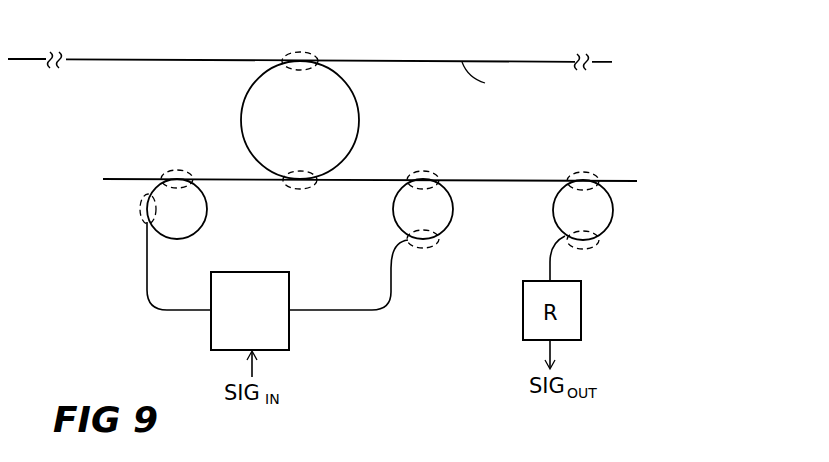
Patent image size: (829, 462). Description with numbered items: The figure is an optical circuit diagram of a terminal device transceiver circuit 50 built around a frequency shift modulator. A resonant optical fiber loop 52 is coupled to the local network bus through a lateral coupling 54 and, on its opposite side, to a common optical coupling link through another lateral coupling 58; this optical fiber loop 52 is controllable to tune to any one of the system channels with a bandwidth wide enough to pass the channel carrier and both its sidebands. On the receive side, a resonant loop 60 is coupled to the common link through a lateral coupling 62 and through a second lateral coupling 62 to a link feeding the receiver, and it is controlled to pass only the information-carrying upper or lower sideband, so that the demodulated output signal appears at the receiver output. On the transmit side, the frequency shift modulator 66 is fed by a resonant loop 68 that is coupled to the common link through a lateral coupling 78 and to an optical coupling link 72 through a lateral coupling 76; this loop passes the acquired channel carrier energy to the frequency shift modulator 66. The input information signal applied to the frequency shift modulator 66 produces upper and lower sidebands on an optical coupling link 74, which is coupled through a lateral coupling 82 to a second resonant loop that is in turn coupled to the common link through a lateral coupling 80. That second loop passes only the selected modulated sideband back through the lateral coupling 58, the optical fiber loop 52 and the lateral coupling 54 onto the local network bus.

The transceiver circuit 50 is at (456, 40).
The optical fiber loop 52 is at (358, 106).
The lateral coupling 54 is at (313, 52).
The lateral coupling 58 is at (297, 184).
The resonant loop 60 is at (613, 211).
The lateral coupling 62 is at (590, 173).
The frequency shift modulator 66 is at (211, 340).
The resonant loop 68 is at (207, 210).
The optical coupling link 72 is at (145, 266).
The optical coupling link 74 is at (330, 311).
The lateral coupling 76 is at (142, 205).
The lateral coupling 78 is at (175, 170).
The lateral coupling 80 is at (428, 170).
The lateral coupling 82 is at (426, 249).